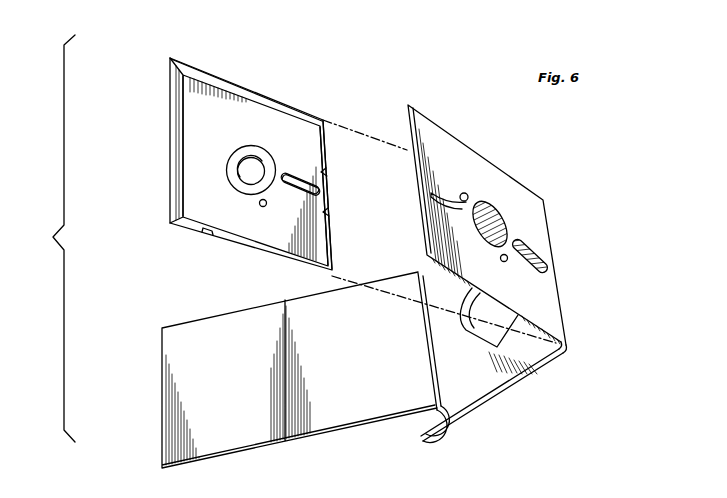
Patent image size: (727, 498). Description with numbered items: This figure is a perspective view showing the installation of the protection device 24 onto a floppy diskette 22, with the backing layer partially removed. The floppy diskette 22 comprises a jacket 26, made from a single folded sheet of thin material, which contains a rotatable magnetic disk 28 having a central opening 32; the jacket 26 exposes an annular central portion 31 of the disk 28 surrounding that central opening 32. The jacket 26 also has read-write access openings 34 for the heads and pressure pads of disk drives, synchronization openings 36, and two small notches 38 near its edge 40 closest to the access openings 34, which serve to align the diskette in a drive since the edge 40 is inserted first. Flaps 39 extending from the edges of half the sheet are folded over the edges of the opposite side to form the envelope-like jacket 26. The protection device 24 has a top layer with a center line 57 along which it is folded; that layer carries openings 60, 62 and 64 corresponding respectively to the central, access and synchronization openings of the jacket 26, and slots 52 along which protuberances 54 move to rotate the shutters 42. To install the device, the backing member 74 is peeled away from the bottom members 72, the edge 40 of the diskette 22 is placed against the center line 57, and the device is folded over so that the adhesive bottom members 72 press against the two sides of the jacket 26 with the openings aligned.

The floppy diskette 22 is at (167, 88).
The protection device 24 is at (433, 121).
The jacket 26 is at (200, 147).
The rotatable magnetic disk 28 is at (237, 169).
The annular central portion 31 is at (263, 158).
The central opening 32 is at (247, 167).
The read-write access openings 34 is at (299, 177).
The synchronization openings 36 is at (262, 208).
The notches 38 is at (327, 172).
The flaps 39 is at (247, 93).
The edge 40 is at (333, 244).
The shutters 42 is at (502, 313).
The slots 52 is at (437, 192).
The protuberances 54 is at (467, 195).
The center line 57 is at (568, 345).
The openings 60 is at (502, 221).
The openings 62 is at (538, 246).
The openings 64 is at (507, 263).
The bottom members 72 is at (473, 388).
The backing member 74 is at (173, 348).